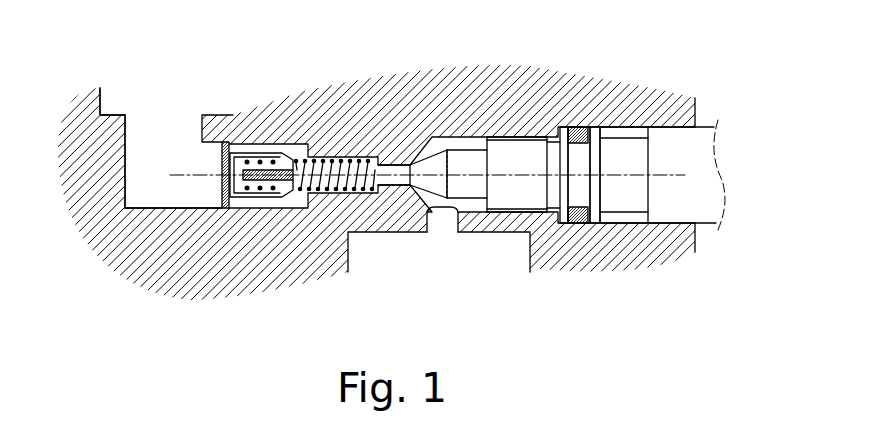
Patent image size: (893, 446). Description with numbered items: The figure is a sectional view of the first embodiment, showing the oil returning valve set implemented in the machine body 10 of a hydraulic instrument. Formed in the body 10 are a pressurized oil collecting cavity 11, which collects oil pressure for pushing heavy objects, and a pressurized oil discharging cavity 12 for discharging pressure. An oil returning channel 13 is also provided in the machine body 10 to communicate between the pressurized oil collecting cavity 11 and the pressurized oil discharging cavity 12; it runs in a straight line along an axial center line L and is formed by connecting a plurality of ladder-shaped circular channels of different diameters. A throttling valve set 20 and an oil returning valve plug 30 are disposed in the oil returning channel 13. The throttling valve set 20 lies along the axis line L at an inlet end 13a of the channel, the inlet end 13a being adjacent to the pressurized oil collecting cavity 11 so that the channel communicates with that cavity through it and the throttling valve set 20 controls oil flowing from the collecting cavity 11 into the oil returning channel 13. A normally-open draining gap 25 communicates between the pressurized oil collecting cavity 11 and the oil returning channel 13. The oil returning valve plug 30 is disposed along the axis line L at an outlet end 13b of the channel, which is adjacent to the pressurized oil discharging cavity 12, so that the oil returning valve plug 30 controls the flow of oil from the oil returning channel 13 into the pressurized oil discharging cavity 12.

The machine body 10 is at (580, 100).
The pressurized oil collecting cavity 11 is at (133, 108).
The pressurized oil discharging cavity 12 is at (401, 259).
The oil returning channel 13 is at (360, 157).
The inlet end 13a is at (163, 132).
The outlet end 13b is at (442, 220).
The throttling valve set 20 is at (283, 202).
The normally-open draining gap 25 is at (293, 157).
The oil returning valve plug 30 is at (515, 157).
The axial center line L is at (667, 173).